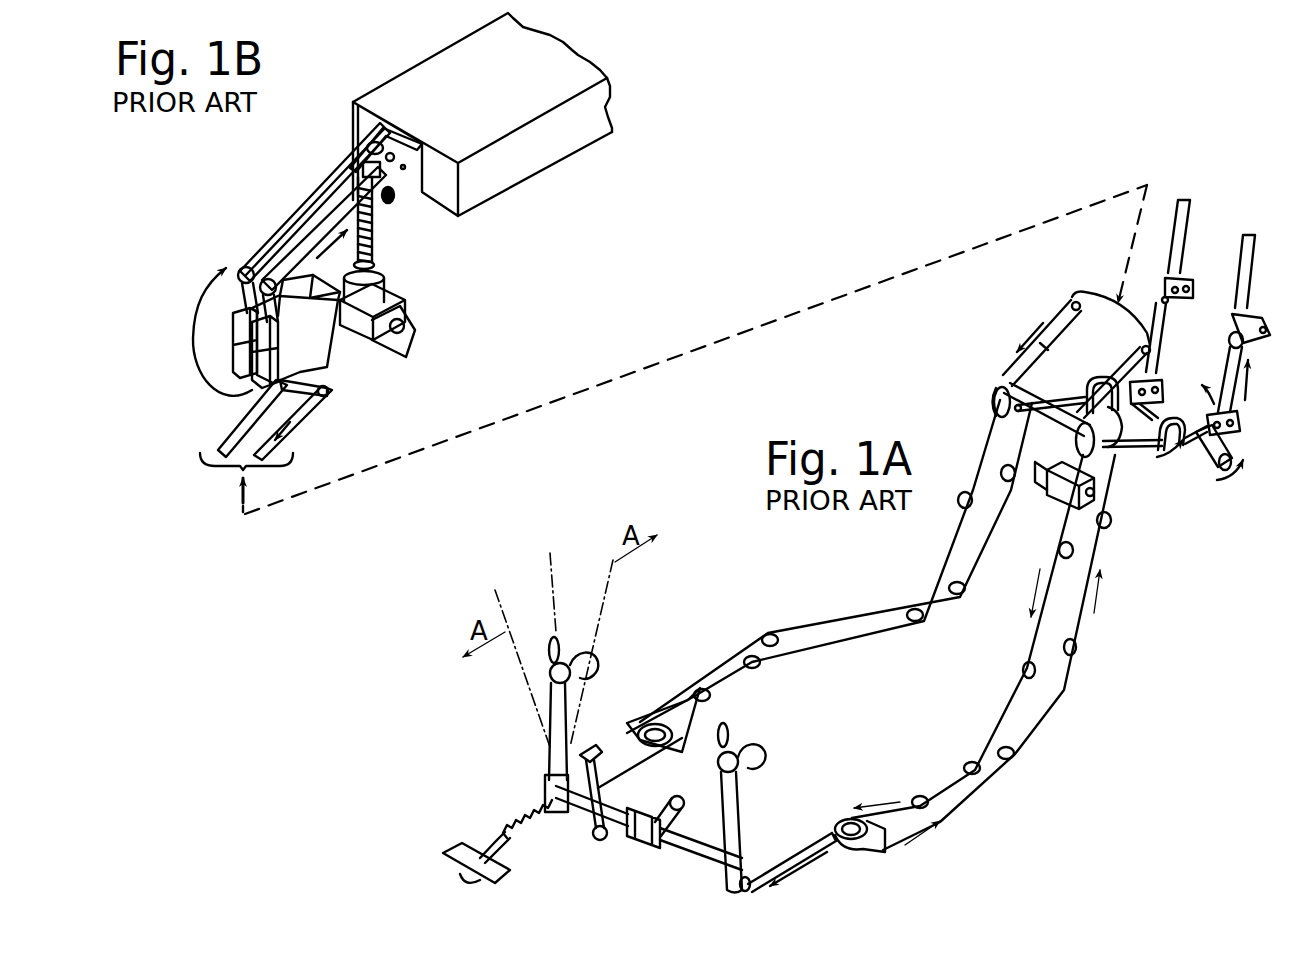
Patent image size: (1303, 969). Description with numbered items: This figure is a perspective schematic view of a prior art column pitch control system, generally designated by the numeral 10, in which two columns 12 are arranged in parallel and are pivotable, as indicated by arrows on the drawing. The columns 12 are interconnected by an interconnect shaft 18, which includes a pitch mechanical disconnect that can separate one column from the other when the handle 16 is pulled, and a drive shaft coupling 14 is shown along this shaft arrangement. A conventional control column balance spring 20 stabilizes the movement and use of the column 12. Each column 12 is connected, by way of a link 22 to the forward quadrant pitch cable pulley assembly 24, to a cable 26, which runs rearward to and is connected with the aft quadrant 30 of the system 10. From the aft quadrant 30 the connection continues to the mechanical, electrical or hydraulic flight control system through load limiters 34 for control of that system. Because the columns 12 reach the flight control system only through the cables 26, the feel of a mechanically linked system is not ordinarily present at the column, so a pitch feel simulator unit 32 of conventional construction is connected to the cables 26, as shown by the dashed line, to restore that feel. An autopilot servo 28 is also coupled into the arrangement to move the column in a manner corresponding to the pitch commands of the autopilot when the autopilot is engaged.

In FIG. 1A, the system for pitch control 10 is at (305, 822).
In FIG. 1A, the column 12 is at (745, 800).
In FIG. 1A, the drive shaft coupling 14 is at (637, 840).
In FIG. 1A, the handle 16 is at (587, 777).
In FIG. 1A, the interconnect shaft 18 is at (695, 852).
In FIG. 1A, the control column balance spring 20 is at (520, 808).
In FIG. 1A, the link 22 is at (768, 868).
In FIG. 1A, the forward quadrant pitch cable pulley assembly 24 is at (845, 850).
In FIG. 1A, the cable 26 is at (1042, 712).
In FIG. 1A, the autopilot servo 28 is at (1048, 490).
In FIG. 1A, the aft quadrant 30 is at (1122, 448).
In FIG. 1B, the pitch feel simulator unit 32 is at (243, 222).
In FIG. 1A, the load limiters 34 is at (1237, 267).